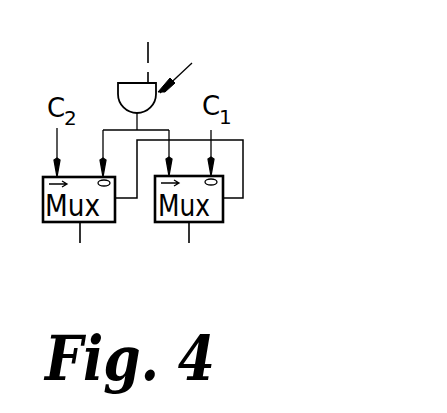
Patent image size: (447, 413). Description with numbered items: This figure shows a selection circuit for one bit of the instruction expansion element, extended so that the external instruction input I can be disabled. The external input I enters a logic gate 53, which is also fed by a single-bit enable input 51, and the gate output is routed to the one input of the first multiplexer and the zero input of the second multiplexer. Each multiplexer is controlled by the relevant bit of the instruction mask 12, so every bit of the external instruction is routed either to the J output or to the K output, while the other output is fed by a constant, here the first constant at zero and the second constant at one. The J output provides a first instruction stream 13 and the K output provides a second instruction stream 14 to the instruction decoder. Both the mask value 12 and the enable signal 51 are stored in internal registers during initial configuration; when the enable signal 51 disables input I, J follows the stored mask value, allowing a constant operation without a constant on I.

The enable input 51 is at (127, 83).
The logic gate 53 is at (192, 65).
The instruction mask 12 is at (243, 198).
The instruction stream 13 is at (84, 263).
The instruction stream 14 is at (194, 263).